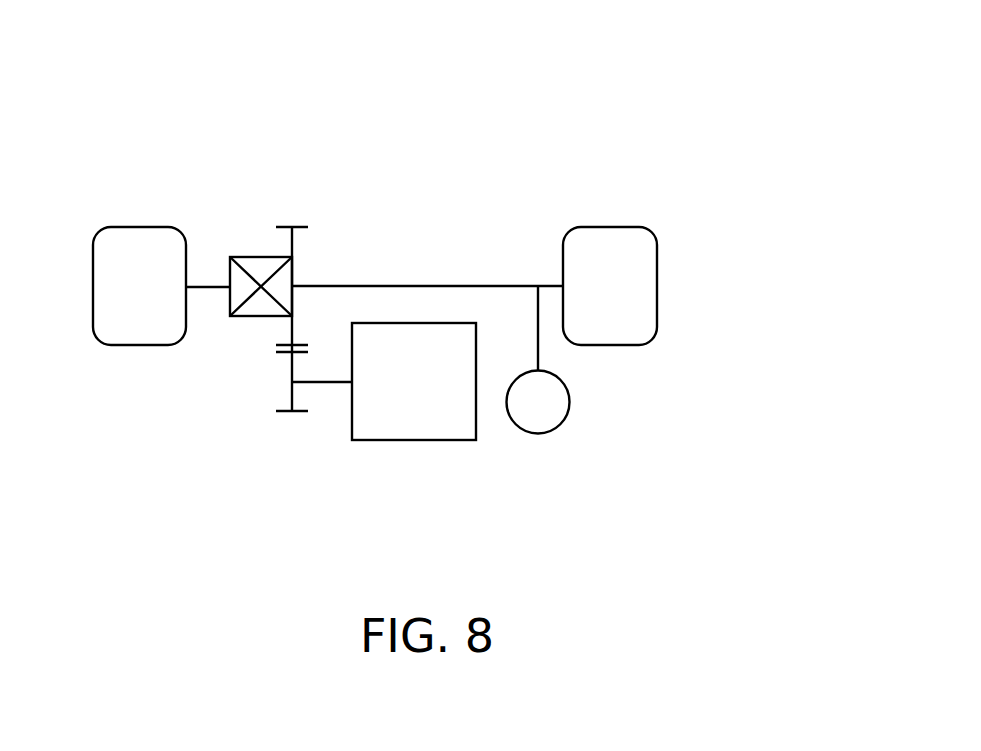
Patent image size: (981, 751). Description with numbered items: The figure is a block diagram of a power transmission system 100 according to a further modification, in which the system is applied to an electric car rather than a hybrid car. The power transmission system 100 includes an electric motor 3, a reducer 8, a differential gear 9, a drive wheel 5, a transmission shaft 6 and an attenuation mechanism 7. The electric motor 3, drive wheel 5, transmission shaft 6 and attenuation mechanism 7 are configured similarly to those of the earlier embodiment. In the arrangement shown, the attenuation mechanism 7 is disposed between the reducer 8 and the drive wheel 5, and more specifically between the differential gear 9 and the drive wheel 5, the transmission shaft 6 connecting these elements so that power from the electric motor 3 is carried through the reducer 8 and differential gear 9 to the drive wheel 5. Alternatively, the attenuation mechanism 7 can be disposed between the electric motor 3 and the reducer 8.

The power transmission system 100 is at (502, 108).
The drive wheel 5 is at (147, 227).
The differential gear 9 is at (252, 257).
The transmission shaft 6 is at (325, 382).
The reducer 8 is at (273, 357).
The electric motor 3 is at (427, 440).
The attenuation mechanism 7 is at (538, 433).